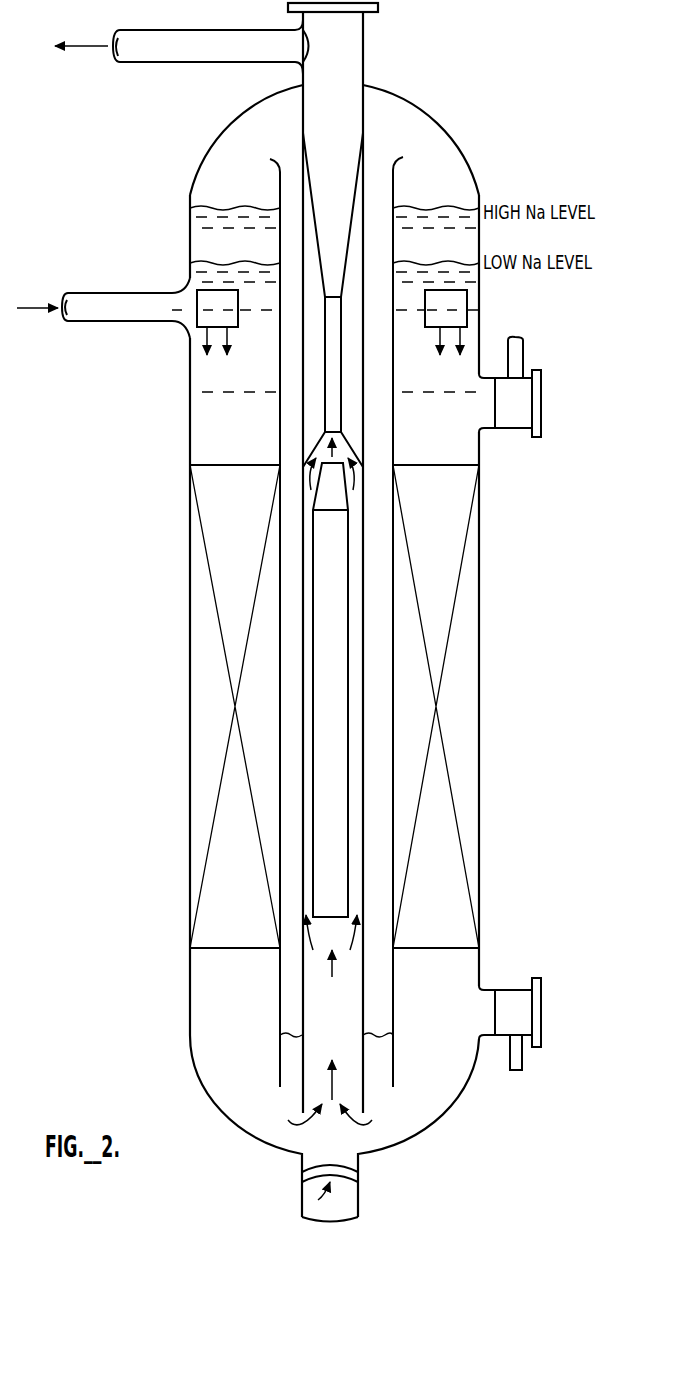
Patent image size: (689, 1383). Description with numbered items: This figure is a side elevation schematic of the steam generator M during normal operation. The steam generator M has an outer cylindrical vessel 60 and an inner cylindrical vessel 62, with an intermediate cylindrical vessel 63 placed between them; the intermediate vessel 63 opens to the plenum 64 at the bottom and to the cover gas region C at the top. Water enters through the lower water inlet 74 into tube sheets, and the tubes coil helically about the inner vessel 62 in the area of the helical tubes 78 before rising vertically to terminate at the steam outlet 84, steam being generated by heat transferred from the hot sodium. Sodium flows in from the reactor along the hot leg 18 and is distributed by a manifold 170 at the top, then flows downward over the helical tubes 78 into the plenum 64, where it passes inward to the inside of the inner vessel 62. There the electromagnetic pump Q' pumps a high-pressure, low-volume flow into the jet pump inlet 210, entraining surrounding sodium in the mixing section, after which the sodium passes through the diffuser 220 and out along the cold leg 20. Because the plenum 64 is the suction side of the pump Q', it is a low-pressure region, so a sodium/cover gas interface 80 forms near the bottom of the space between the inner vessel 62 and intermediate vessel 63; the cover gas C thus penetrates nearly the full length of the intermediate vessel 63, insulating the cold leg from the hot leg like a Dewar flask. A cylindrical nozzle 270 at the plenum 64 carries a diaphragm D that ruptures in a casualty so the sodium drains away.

The cold leg 20 is at (190, 30).
The hot leg 18 is at (103, 293).
The outer cylindrical vessel 60 is at (482, 577).
The inner cylindrical vessel 62 is at (366, 377).
The intermediate cylindrical vessel 63 is at (396, 466).
The plenum 64 is at (243, 1033).
The lower water inlet 74 is at (508, 990).
The helical tubes 78 is at (182, 463).
The sodium/cover gas interface 80 is at (372, 1035).
The steam outlet 84 is at (505, 428).
The manifold 170 is at (238, 308).
The jet pump inlet 210 is at (346, 446).
The diffuser 220 is at (320, 262).
The cylindrical nozzle 270 is at (302, 1160).
The cover gas region C is at (395, 152).
The steam generator M is at (483, 651).
The electromagnetic pump Q is at (351, 616).
The diaphragm D is at (305, 1217).